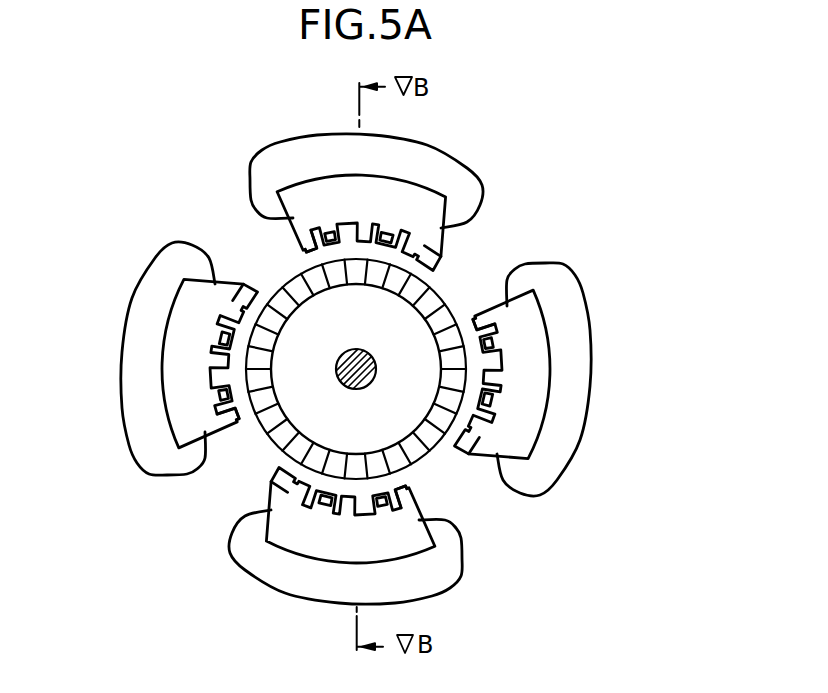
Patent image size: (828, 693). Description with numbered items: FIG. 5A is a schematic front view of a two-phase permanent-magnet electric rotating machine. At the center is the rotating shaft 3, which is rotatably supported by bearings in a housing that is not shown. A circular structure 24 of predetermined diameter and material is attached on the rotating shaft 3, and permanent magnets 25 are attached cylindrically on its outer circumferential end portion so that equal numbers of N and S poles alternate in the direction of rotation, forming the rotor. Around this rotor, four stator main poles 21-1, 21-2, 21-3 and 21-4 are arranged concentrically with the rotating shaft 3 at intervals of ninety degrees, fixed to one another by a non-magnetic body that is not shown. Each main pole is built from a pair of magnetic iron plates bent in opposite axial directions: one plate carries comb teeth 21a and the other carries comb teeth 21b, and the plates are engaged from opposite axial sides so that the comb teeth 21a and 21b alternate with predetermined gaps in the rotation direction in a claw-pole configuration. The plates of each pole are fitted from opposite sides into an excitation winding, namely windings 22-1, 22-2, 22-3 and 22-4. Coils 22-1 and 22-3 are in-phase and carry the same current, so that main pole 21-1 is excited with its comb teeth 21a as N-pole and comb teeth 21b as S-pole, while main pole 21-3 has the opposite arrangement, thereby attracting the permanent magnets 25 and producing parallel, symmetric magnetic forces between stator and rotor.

The rotating shaft 3 is at (364, 350).
The circular structure 24 is at (380, 433).
The permanent magnets 25 is at (273, 357).
The stator main pole 21-1 is at (313, 190).
The stator main pole 21-2 is at (530, 387).
The stator main pole 21-3 is at (305, 538).
The stator main pole 21-4 is at (180, 357).
The excitation winding 22-1 is at (427, 157).
The excitation winding 22-2 is at (567, 312).
The excitation winding 22-3 is at (433, 580).
The excitation winding 22-4 is at (140, 281).
The comb teeth 21a is at (300, 245).
The comb teeth 21b is at (247, 287).